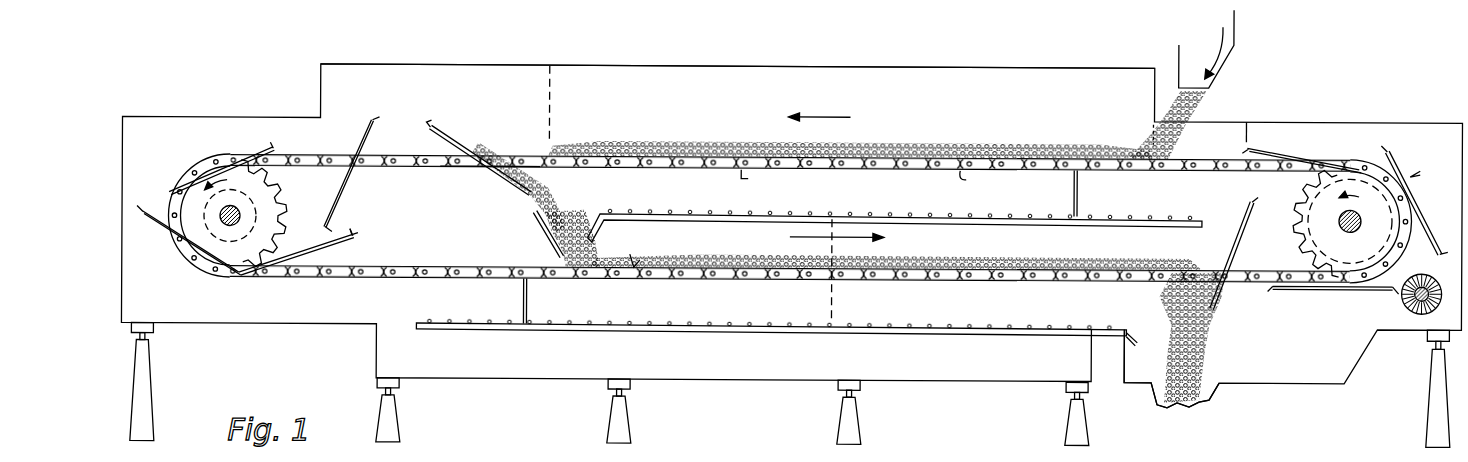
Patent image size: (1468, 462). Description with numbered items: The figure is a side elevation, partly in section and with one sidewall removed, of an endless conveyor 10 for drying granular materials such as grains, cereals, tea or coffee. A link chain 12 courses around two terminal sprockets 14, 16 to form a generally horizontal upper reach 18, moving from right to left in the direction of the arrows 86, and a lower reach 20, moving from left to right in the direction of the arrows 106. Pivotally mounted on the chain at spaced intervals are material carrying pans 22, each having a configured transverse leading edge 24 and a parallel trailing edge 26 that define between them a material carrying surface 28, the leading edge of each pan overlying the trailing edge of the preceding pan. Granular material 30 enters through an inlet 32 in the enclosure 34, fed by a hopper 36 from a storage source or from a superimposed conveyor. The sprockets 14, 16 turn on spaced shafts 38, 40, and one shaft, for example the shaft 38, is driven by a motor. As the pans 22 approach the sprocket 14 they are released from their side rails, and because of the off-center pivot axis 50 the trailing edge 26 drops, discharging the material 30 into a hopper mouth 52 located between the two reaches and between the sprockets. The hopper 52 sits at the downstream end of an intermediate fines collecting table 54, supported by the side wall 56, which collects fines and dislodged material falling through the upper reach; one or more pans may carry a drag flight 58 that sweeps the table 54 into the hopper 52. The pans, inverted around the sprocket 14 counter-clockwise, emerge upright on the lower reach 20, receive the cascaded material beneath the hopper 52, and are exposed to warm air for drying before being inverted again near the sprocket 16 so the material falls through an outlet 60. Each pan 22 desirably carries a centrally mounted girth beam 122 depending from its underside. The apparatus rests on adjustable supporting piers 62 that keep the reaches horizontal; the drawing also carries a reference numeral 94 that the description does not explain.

The endless conveyor 10 is at (1333, 152).
The link chain 12 is at (1188, 168).
The terminal sprocket 14 is at (270, 190).
The terminal sprocket 16 is at (1305, 222).
The upper reach 18 is at (412, 154).
The lower reach 20 is at (440, 281).
The material carrying pans 22 is at (1275, 151).
The leading edge 24 is at (436, 124).
The trailing edge 26 is at (1434, 250).
The material carrying surface 28 is at (1425, 228).
The granular material 30 is at (960, 136).
The inlet 32 is at (1215, 128).
The enclosure 34 is at (1020, 62).
The hopper 36 is at (1222, 67).
The shaft 38 is at (1356, 222).
The shaft 40 is at (236, 223).
The pivot axis 50 is at (455, 169).
The hopper mouth 52 is at (590, 230).
The intermediate fines collecting table 54 is at (900, 210).
The side wall 56 is at (735, 99).
The drag flight 58 is at (1078, 193).
The outlet 60 is at (1215, 395).
The supporting piers 62 is at (158, 393).
The arrows 86 is at (842, 114).
The lower pan 94 is at (777, 390).
The arrows 106 is at (872, 236).
The girth beam 122 is at (745, 172).